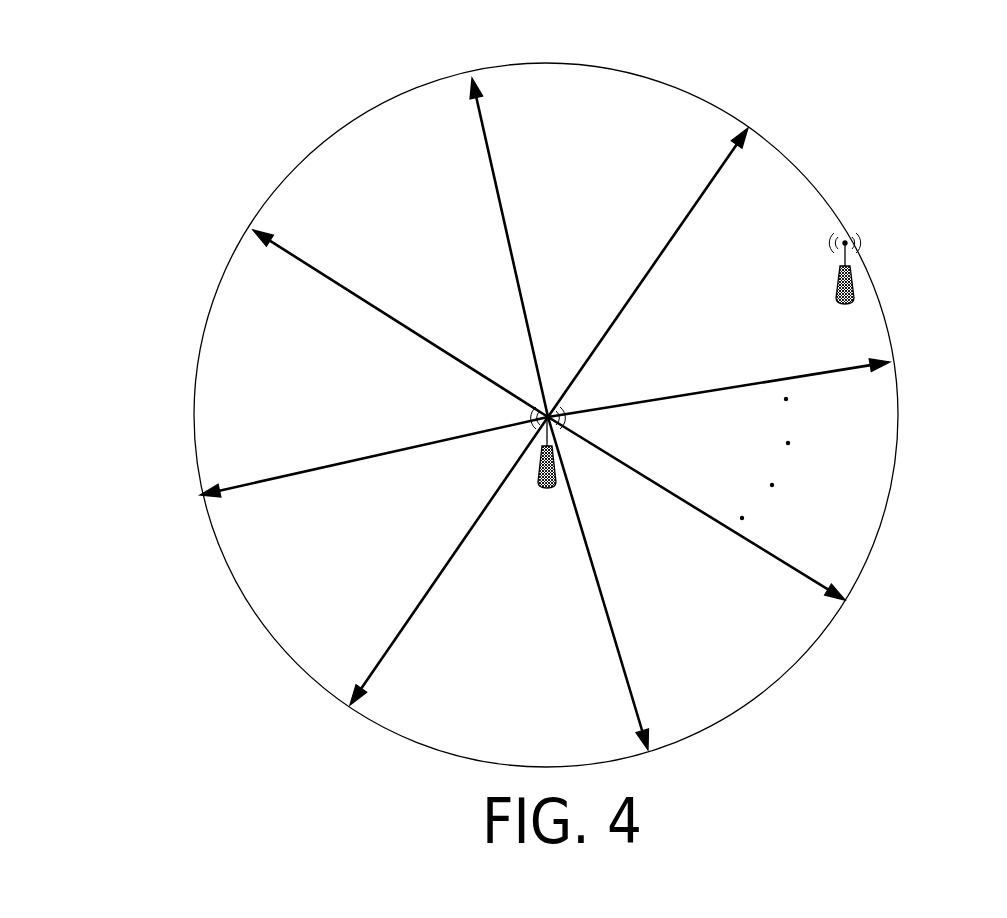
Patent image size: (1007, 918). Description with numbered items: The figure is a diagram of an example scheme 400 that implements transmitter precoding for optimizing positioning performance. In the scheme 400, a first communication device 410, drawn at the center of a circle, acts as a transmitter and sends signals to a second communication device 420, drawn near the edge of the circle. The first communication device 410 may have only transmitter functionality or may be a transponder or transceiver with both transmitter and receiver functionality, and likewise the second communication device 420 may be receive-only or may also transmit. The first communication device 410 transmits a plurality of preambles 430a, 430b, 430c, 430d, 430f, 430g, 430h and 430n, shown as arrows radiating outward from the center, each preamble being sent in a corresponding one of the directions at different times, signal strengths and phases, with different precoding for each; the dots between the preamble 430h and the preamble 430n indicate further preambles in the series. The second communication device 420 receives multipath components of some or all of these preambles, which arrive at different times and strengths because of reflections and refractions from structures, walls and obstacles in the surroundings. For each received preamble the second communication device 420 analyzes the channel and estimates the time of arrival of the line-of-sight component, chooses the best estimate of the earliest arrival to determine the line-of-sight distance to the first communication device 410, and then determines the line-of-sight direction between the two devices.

The scheme 400 is at (271, 84).
The first communication device 410 is at (562, 521).
The second communication device 420 is at (862, 331).
The preamble 430a is at (678, 241).
The preamble 430b is at (534, 225).
The preamble 430c is at (331, 323).
The preamble 430d is at (324, 457).
The preamble 430f is at (364, 561).
The preamble 430g is at (686, 597).
The preamble 430h is at (753, 508).
The preamble 430n is at (761, 361).